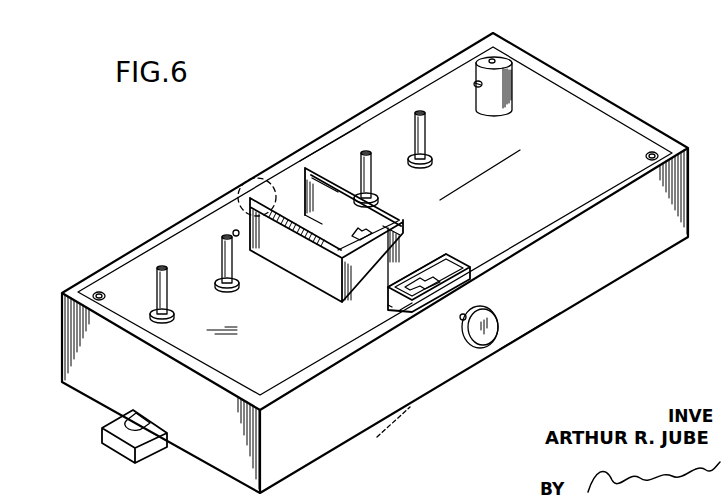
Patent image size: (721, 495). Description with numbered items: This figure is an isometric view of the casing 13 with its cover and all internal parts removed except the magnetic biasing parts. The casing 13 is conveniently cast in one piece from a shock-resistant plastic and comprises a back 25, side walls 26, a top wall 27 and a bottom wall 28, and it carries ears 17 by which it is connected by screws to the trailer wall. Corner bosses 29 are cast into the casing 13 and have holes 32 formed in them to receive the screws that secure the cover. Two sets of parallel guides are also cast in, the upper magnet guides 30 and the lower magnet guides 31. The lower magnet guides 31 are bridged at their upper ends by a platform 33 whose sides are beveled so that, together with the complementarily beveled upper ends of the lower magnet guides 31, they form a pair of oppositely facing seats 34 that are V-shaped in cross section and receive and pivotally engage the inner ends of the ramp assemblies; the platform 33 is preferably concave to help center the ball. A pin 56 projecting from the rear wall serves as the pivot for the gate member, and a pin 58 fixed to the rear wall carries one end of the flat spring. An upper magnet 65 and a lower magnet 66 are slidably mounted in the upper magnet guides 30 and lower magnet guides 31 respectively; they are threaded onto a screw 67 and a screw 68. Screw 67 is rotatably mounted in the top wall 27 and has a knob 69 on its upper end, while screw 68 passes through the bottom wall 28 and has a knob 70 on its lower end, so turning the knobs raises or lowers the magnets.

The casing 13 is at (150, 183).
The ears 17 is at (112, 455).
The back 25 is at (506, 179).
The side walls 26 is at (107, 398).
The top wall 27 is at (330, 130).
The bottom wall 28 is at (640, 256).
The corner bosses 29 is at (503, 72).
The upper magnet guides 30 is at (320, 168).
The lower magnet guides 31 is at (407, 302).
The holes 32 is at (99, 292).
The platform 33 is at (418, 262).
The seats 34 is at (455, 254).
The pin 56 is at (160, 266).
The pin 58 is at (227, 236).
The upper magnet 65 is at (343, 233).
The lower magnet 66 is at (458, 263).
The screw 67 is at (285, 205).
The screw 68 is at (463, 335).
The knob 69 is at (253, 173).
The knob 70 is at (497, 324).